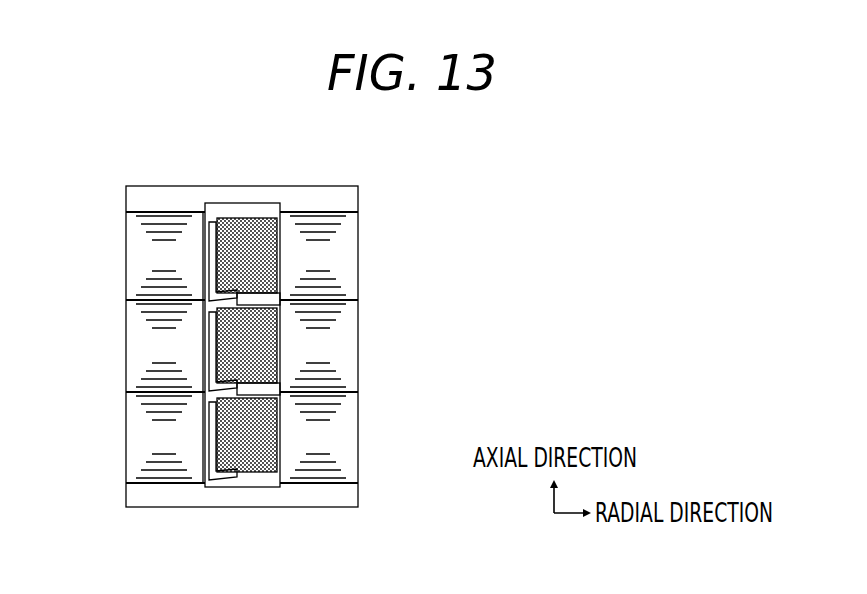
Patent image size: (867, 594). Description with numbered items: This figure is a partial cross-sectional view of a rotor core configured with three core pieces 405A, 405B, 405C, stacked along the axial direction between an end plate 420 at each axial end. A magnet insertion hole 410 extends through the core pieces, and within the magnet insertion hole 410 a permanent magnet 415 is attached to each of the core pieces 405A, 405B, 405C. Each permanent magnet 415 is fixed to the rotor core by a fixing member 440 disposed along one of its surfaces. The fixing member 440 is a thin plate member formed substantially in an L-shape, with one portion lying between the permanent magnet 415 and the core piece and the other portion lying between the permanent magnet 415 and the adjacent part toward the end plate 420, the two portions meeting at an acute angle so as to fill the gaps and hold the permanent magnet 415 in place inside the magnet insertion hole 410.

The magnet insertion hole 410 is at (207, 216).
The permanent magnet 415 is at (260, 222).
The end plate 420 is at (352, 197).
The core piece 405A is at (352, 268).
The core piece 405B is at (352, 373).
The core piece 405C is at (352, 455).
The fixing member 440 is at (207, 280).